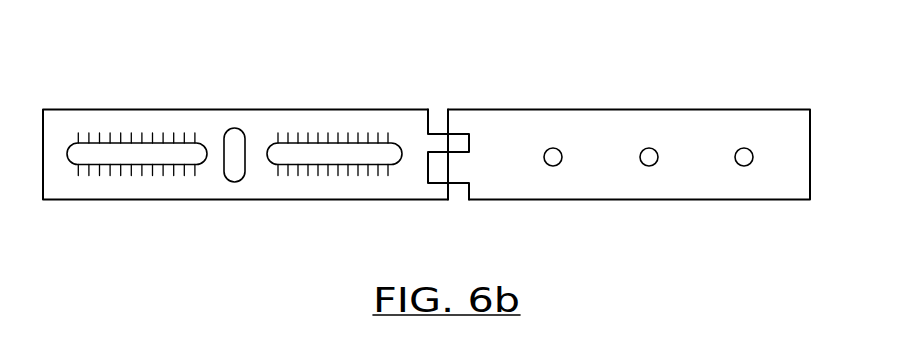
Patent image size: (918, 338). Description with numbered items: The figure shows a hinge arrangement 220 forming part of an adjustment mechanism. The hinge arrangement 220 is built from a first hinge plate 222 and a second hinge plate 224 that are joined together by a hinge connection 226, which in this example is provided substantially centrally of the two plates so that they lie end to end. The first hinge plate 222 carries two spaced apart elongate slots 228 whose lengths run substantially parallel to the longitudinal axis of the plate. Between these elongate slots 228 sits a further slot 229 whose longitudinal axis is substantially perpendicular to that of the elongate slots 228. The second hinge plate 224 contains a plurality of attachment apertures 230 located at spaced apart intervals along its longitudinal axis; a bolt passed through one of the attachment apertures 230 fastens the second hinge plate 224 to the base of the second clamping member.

The hinge arrangement 220 is at (486, 206).
The first hinge plate 222 is at (332, 110).
The second hinge plate 224 is at (613, 110).
The hinge connection 226 is at (439, 127).
The elongate slots 228 is at (305, 150).
The further slot 229 is at (233, 173).
The attachment apertures 230 is at (552, 148).